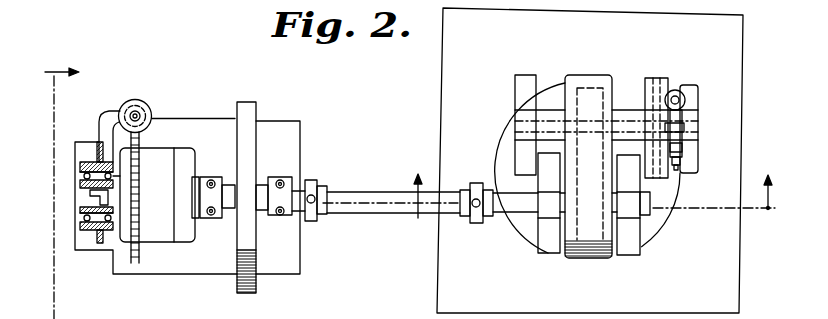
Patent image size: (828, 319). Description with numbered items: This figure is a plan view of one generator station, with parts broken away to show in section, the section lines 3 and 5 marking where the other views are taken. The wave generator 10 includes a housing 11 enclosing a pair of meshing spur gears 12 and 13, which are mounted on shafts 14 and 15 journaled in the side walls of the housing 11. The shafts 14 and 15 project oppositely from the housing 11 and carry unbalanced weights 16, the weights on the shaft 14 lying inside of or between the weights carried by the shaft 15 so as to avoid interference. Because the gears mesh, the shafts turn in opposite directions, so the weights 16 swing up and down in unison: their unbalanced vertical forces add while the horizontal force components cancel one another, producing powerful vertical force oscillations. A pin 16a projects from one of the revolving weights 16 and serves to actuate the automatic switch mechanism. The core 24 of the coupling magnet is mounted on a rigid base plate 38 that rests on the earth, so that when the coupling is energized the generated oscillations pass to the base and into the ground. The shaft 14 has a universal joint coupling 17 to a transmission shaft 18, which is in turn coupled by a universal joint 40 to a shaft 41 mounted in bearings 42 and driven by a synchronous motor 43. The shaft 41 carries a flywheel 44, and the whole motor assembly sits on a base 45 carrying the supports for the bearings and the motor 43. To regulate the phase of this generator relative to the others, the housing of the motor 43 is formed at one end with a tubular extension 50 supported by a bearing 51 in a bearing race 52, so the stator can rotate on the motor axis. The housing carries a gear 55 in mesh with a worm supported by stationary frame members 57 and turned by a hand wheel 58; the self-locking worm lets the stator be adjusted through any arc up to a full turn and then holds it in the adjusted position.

The section line 3- 3 is at (594, 213).
The section line 5- 5 is at (51, 189).
The wave generator 10 is at (628, 98).
The housing 11 is at (620, 66).
The spur gear 12 is at (589, 246).
The spur gear 13 is at (590, 88).
The shaft 14 is at (511, 212).
The shaft 15 is at (672, 127).
The unbalanced weight 16 is at (534, 78).
The pin 16a is at (681, 146).
The universal joint coupling 17 is at (471, 218).
The transmission shaft 18 is at (374, 210).
The pot magnet core 24 is at (680, 190).
The base plate 38 is at (744, 53).
The universal joint 40 is at (315, 196).
The shaft 41 is at (230, 162).
The bearing 42 is at (210, 218).
The synchronous motor 43 is at (172, 149).
The flywheel 44 is at (258, 113).
The base 45 is at (157, 275).
The tubular extension 50 is at (93, 190).
The bearing 51 is at (84, 174).
The bearing race 52 is at (83, 163).
The gear 55 is at (148, 132).
The stationary frame member 57 is at (112, 110).
The hand wheel 58 is at (144, 100).